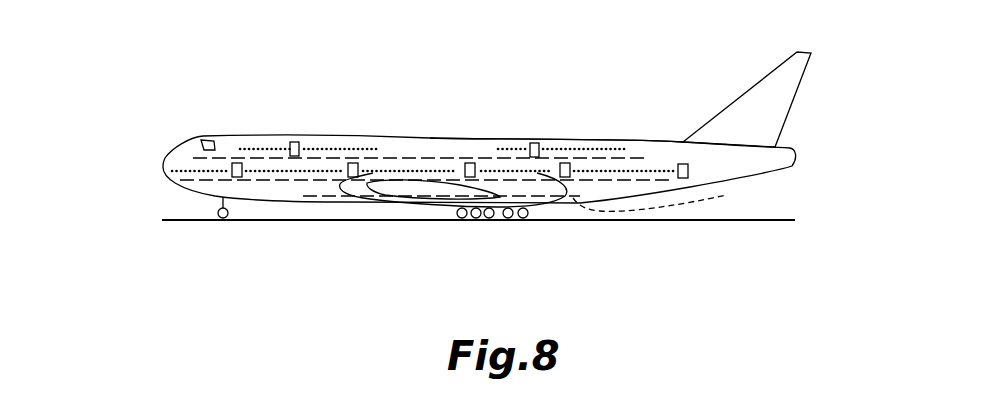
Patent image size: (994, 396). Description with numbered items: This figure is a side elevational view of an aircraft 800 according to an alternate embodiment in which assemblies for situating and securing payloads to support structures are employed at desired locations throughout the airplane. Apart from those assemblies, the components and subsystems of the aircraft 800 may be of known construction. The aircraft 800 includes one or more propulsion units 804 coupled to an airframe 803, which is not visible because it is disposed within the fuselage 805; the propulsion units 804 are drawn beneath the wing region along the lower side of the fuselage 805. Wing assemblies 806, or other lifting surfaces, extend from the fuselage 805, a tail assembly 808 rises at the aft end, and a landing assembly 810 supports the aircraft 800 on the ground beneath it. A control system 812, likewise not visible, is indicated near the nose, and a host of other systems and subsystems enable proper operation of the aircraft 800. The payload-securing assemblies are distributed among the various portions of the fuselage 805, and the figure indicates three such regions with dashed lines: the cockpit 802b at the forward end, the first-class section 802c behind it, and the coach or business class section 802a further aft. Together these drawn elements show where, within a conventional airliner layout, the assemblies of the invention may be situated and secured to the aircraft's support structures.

The aircraft 800 is at (485, 158).
The control system 812 is at (166, 143).
The coach or business class section 802a is at (576, 149).
The cockpit 802b is at (155, 155).
The first-class section 802c is at (318, 147).
The airframe 803 is at (671, 201).
The propulsion unit 804 is at (346, 197).
The fuselage 805 is at (615, 138).
The wing assembly 806 is at (432, 201).
The tail assembly 808 is at (812, 100).
The landing assembly 810 is at (531, 240).